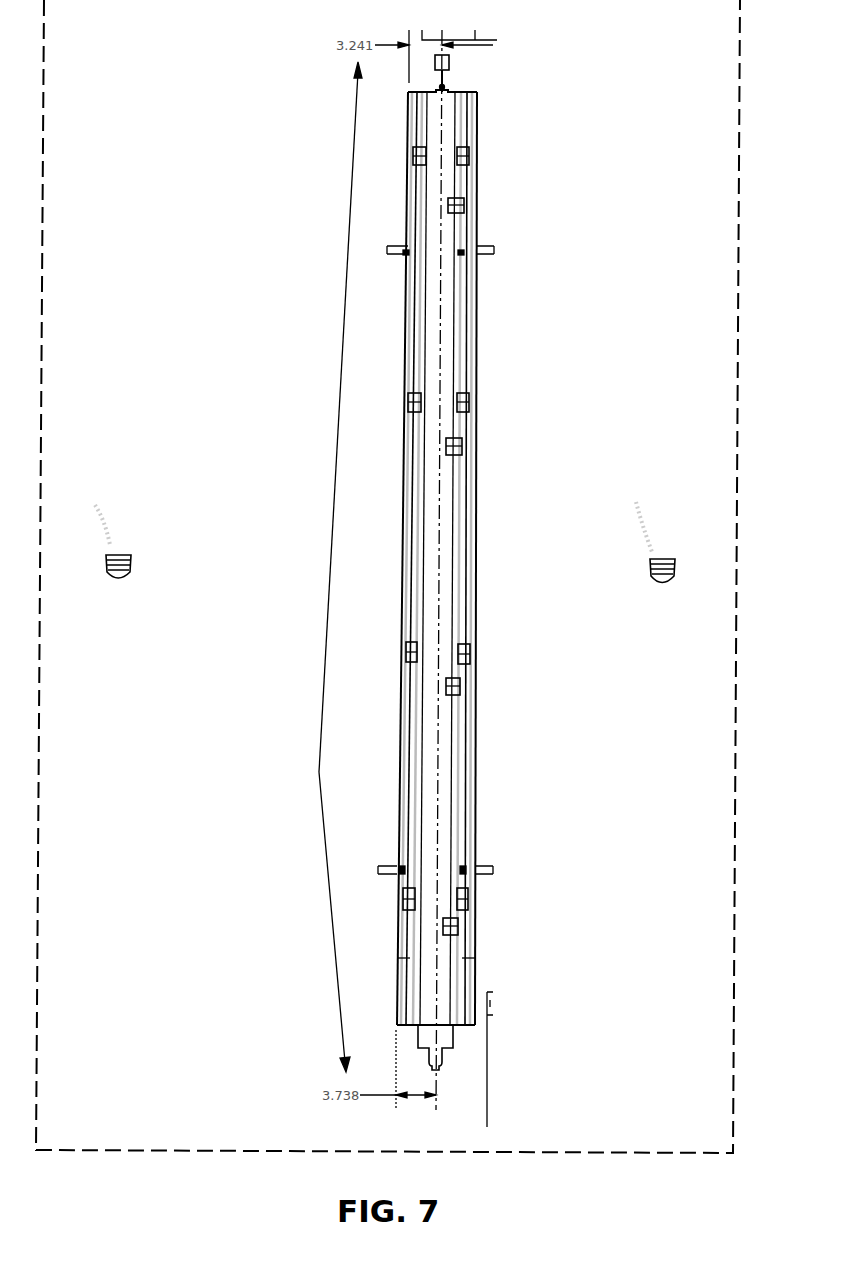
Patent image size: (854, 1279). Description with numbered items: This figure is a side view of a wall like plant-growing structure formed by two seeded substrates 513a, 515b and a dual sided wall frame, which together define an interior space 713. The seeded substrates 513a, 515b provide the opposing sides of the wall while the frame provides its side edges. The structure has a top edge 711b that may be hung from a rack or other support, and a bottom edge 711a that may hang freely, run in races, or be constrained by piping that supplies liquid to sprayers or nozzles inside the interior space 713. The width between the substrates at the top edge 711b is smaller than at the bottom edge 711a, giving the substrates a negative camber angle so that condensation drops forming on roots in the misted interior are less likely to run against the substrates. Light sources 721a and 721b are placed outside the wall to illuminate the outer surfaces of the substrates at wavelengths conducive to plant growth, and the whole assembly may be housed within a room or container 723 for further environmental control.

The bottom edge 711a is at (306, 1020).
The top edge 711b is at (326, 106).
The interior space 713 is at (458, 70).
The light source 721a is at (133, 485).
The light source 721b is at (665, 482).
The enclosure boundary 723 is at (734, 556).
The seeded substrate 513a is at (400, 590).
The seeded substrate 515b is at (467, 540).